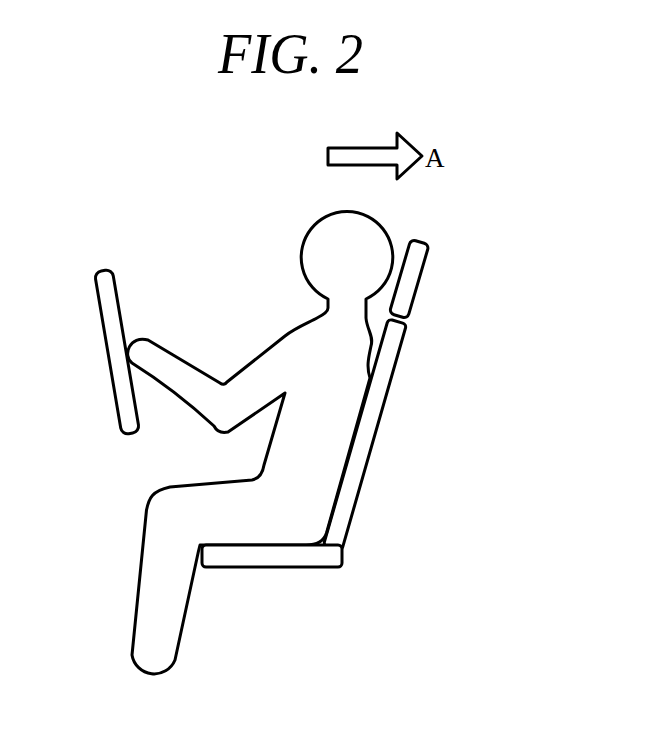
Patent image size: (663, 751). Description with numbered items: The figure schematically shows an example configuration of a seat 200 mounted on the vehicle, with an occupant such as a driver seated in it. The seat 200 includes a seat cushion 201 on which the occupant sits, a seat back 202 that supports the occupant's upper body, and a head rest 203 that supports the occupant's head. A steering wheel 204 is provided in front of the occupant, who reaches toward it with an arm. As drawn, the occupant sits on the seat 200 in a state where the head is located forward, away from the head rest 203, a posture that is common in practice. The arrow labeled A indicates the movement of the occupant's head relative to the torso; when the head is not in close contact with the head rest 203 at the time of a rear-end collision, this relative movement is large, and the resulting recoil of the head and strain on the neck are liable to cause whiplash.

The seat 200 is at (357, 436).
The seat cushion 201 is at (292, 568).
The seat back 202 is at (362, 467).
The head rest 203 is at (426, 277).
The steering wheel 204 is at (103, 270).